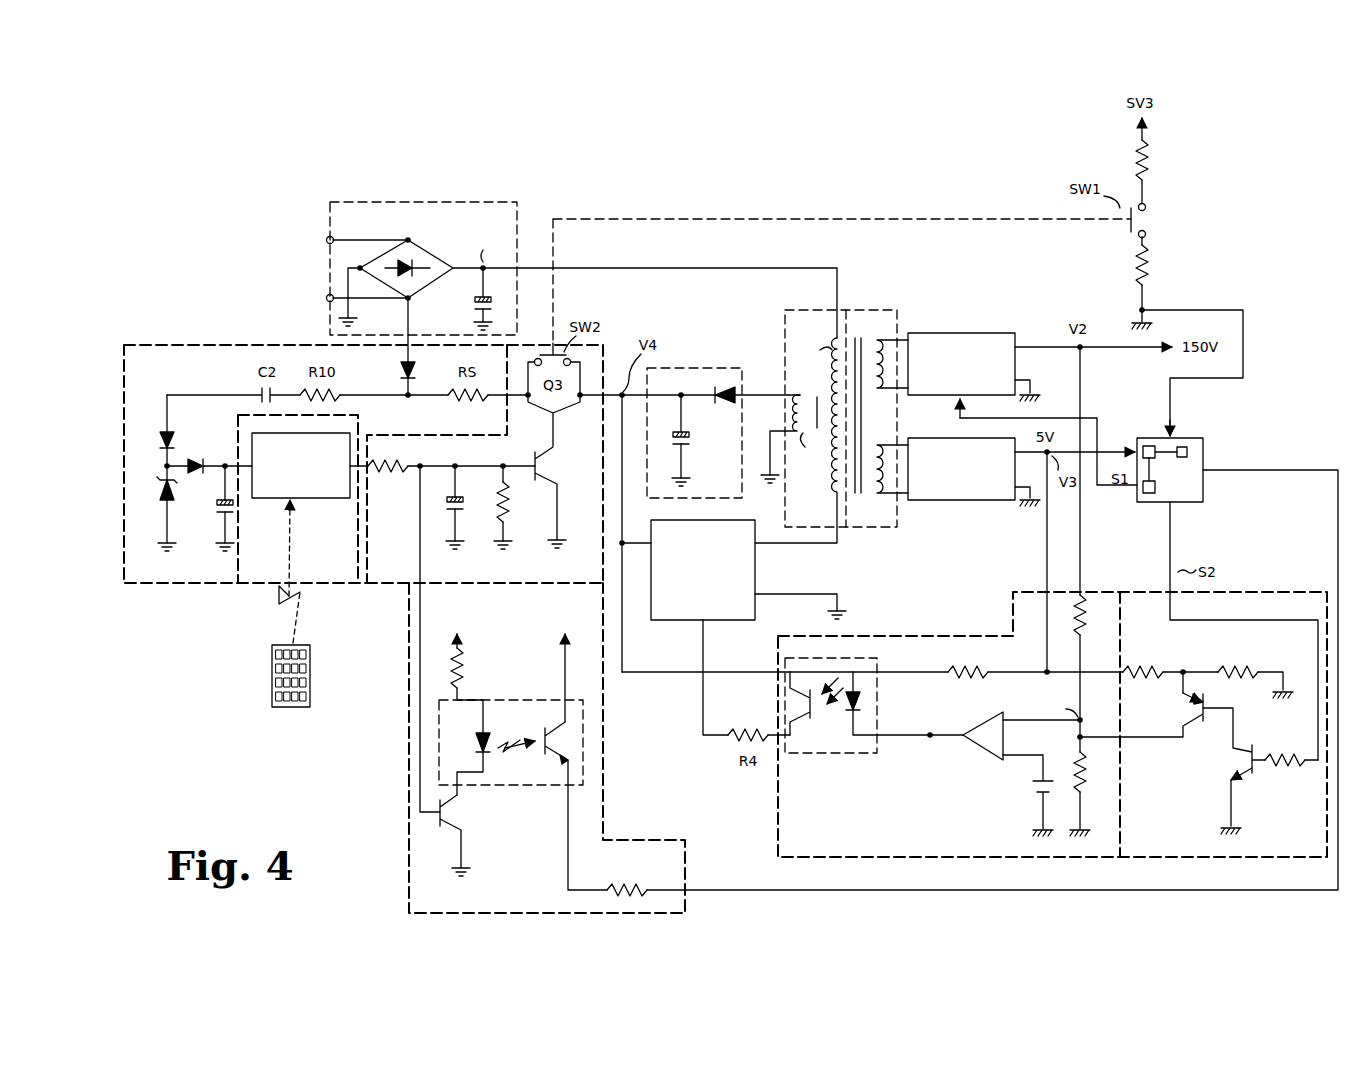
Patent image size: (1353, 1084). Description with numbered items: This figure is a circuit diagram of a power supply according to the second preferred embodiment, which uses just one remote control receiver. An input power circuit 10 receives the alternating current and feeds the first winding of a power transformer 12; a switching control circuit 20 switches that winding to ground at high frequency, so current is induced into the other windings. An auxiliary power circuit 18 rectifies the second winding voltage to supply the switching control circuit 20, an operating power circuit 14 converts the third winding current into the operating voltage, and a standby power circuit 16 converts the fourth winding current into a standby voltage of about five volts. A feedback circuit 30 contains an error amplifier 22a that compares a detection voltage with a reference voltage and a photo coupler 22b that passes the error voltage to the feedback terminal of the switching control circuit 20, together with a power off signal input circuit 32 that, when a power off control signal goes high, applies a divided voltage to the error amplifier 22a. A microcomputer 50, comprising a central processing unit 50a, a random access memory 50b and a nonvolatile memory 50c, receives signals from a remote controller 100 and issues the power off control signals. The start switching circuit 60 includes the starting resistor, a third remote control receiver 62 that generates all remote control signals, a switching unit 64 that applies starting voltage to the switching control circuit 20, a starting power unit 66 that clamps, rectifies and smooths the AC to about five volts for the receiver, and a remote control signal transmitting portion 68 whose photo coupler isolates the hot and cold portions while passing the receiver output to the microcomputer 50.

The input power circuit 10 is at (436, 201).
The power transformer 12 is at (885, 308).
The operating power circuit 14 is at (980, 332).
The standby power circuit 16 is at (975, 506).
The auxiliary power circuit 18 is at (710, 367).
The switching control circuit 20 is at (680, 622).
The error amplifier 22a is at (983, 759).
The photo coupler 22b is at (843, 755).
The feedback circuit 30 is at (776, 834).
The power off signal input circuit 32 is at (1295, 848).
The microcomputer 50 is at (1199, 504).
The central processing unit 50a is at (1150, 445).
The random access memory 50b is at (1186, 445).
The nonvolatile memory 50c is at (1147, 494).
The start switching circuit 60 is at (165, 586).
The third remote control receiver 62 is at (320, 499).
The switching unit 64 is at (519, 575).
The starting power unit 66 is at (142, 575).
The remote control signal transmitting portion 68 is at (437, 903).
The remote controller 100 is at (300, 708).